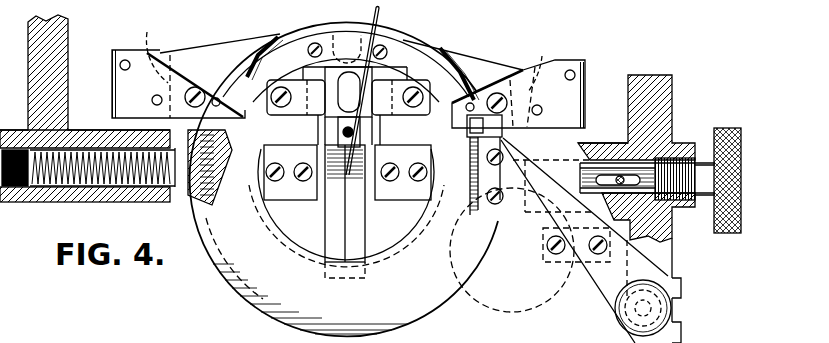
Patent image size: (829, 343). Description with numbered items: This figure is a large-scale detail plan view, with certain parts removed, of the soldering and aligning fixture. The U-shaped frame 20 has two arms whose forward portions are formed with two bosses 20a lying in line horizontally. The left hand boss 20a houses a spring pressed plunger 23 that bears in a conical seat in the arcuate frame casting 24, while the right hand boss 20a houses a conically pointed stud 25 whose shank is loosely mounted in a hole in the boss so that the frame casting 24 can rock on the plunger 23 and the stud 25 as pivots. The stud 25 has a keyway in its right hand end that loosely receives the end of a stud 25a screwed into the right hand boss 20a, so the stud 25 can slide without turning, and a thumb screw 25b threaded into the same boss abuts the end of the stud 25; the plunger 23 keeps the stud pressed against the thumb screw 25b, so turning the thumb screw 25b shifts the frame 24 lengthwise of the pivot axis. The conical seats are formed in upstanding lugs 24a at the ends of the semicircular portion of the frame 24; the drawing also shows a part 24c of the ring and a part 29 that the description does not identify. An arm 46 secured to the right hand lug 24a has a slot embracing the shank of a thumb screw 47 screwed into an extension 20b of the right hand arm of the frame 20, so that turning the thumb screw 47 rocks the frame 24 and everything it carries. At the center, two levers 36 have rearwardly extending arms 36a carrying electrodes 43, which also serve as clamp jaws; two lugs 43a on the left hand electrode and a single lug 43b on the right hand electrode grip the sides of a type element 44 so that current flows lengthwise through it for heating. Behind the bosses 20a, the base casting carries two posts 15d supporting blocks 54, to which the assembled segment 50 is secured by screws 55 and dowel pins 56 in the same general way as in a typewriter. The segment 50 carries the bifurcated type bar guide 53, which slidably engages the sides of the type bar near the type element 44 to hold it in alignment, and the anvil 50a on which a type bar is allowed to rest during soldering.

The post 15d is at (341, 53).
The U-shaped frame 20 is at (68, 38).
The boss 20a is at (85, 140).
The extension 20b is at (652, 252).
The spring pressed plunger 23 is at (72, 196).
The arcuate frame casting 24 is at (220, 236).
The upstanding lug 24a is at (190, 197).
The ring groove 24c is at (456, 306).
The conically pointed stud 25 is at (610, 170).
The stud 25a is at (624, 177).
The thumb screw 25b is at (731, 235).
The latch block 29 is at (543, 236).
The lever 36 is at (424, 338).
The rearwardly extending arm 36a is at (249, 336).
The electrode 43 is at (291, 158).
The lug 43a is at (330, 198).
The lug 43b is at (362, 198).
The type element 44 is at (386, 95).
The arm 46 is at (592, 285).
The thumb screw 47 is at (672, 313).
The assembled segment 50 is at (436, 45).
The anvil 50a is at (278, 54).
The type bar guide 53 is at (348, 40).
The block 54 is at (126, 60).
The screw 55 is at (198, 88).
The dowel pin 56 is at (222, 78).